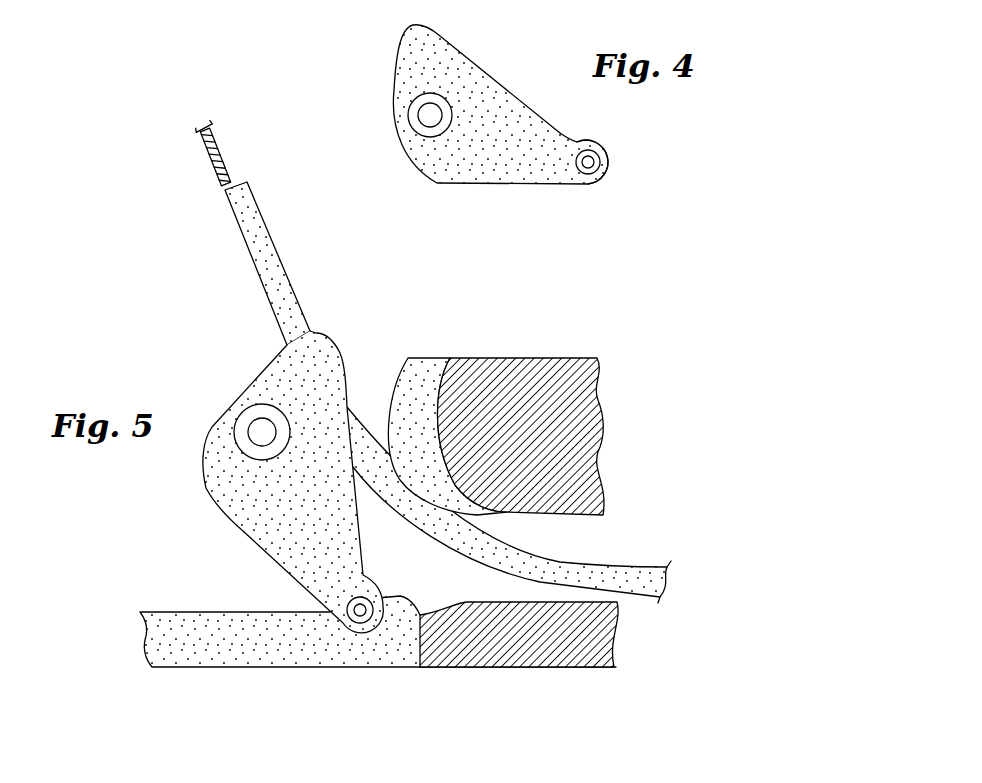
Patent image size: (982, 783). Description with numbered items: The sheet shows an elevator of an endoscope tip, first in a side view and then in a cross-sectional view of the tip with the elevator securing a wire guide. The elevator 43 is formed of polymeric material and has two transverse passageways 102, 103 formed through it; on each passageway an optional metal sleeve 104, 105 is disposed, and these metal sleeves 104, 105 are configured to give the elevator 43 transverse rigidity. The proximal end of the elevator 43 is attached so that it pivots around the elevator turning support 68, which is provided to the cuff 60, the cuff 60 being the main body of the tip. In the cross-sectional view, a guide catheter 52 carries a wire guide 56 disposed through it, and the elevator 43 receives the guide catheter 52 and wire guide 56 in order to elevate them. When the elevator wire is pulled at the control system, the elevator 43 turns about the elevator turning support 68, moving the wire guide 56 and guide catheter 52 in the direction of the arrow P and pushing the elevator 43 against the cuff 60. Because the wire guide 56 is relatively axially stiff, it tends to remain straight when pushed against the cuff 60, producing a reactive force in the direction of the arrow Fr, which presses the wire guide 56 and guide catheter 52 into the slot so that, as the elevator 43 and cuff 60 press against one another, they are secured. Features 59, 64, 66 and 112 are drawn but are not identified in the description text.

In FIG. 4, the metal sleeve 104 is at (452, 115).
In FIG. 4, the metal sleeve 105 is at (610, 162).
In FIG. 4, the transverse passageway 102 is at (430, 117).
In FIG. 4, the transverse passageway 103 is at (588, 162).
In FIG. 5, the elevator 43 is at (307, 562).
In FIG. 5, the anvil block 64 is at (483, 593).
In FIG. 5, the flexible strip 112 is at (533, 573).
In FIG. 5, the strip upper surface 66 is at (460, 500).
In FIG. 5, the cuff 60 is at (527, 358).
In FIG. 5, the wire guide 56 is at (210, 150).
In FIG. 5, the guide catheter 52 is at (273, 303).
In FIG. 5, the cam lever 59 is at (250, 515).
In FIG. 5, the elevator turning support 68 is at (360, 620).
In FIG. 5, the reactive force arrow Fr is at (292, 398).
In FIG. 5, the direction arrow P is at (413, 462).